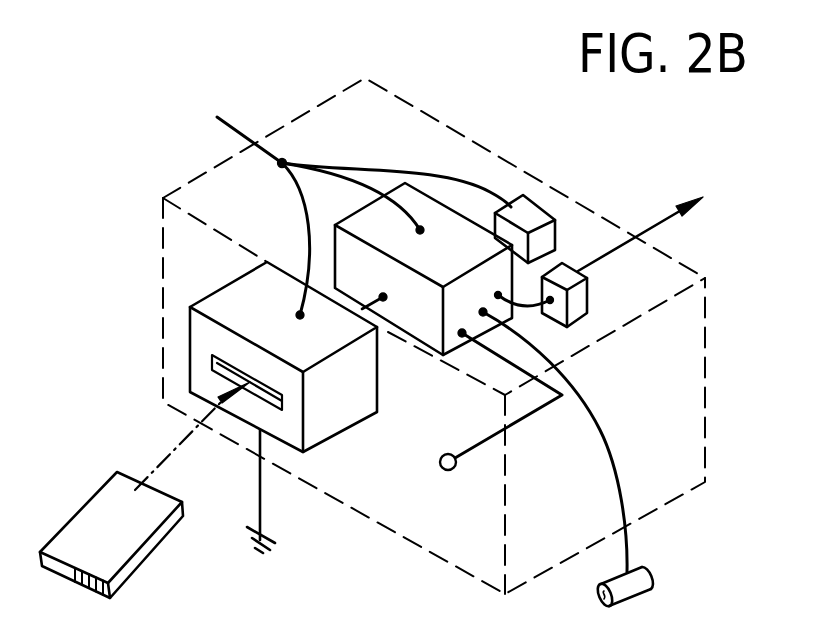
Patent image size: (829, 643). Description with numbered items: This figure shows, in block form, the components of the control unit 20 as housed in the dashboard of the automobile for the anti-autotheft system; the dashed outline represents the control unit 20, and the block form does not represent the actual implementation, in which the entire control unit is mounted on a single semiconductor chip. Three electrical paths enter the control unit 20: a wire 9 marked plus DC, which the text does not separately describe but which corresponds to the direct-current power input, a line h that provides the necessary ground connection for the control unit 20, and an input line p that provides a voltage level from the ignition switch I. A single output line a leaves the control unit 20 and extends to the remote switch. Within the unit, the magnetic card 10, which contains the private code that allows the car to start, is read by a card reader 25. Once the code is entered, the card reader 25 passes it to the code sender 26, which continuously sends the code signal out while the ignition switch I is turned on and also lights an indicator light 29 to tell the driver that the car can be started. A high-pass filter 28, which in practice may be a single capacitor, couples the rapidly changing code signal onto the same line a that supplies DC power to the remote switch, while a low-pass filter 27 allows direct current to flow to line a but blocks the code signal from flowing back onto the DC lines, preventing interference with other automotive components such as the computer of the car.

The DC supply wire 9 is at (222, 124).
The magnetic card 10 is at (72, 528).
The control unit 20 is at (162, 302).
The card reader 25 is at (338, 415).
The code sender 26 is at (466, 258).
The low-pass filter 27 is at (535, 214).
The high-pass filter 28 is at (589, 298).
The indicator light 29 is at (447, 471).
The output line a is at (650, 228).
The ground line h is at (260, 490).
The input line p is at (618, 453).
The ignition switch I is at (646, 581).